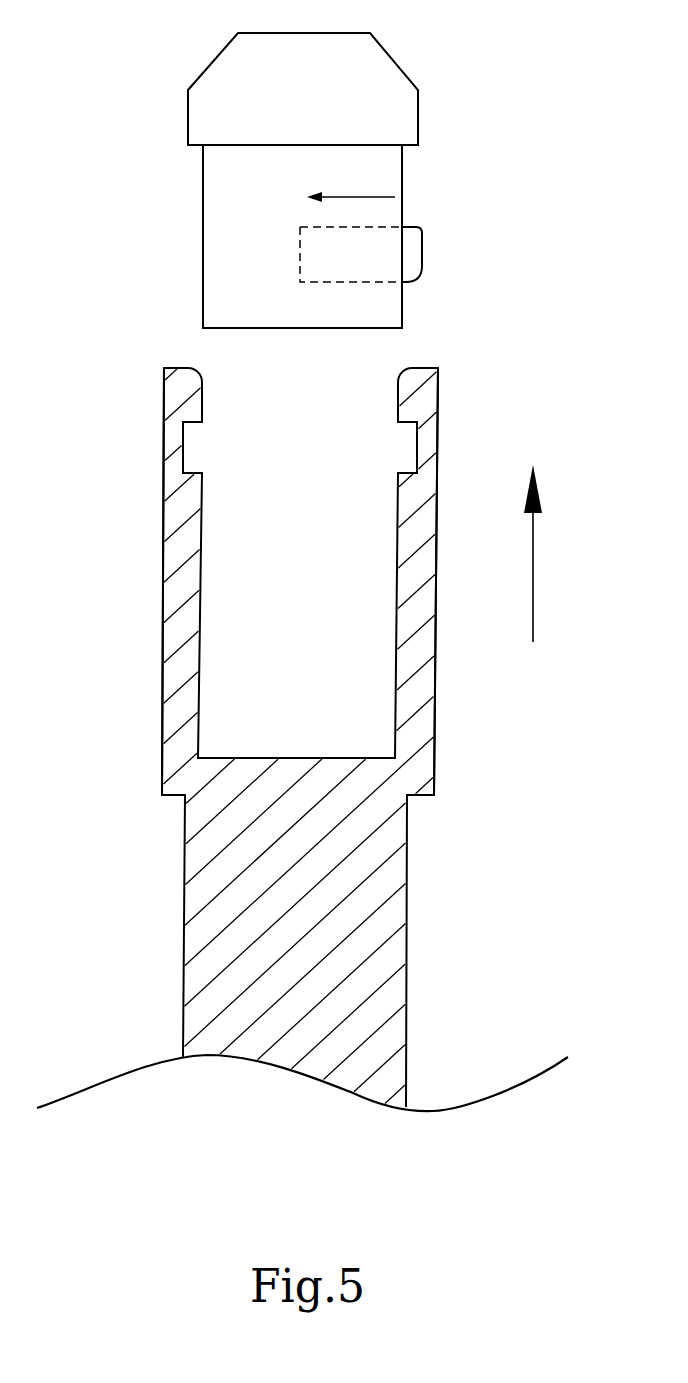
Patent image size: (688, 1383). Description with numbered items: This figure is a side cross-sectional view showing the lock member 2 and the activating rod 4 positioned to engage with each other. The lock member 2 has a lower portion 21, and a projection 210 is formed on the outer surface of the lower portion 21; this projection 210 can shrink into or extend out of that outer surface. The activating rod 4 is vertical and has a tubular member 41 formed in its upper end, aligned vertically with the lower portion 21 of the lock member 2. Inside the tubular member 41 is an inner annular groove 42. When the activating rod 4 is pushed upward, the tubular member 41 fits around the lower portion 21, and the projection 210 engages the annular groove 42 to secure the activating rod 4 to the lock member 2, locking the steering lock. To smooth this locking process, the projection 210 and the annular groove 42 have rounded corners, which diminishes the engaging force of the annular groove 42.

The lock member 2 is at (197, 80).
The lower portion 21 is at (203, 240).
The projection 210 is at (412, 240).
The activating rod 4 is at (132, 768).
The tubular member 41 is at (168, 562).
The inner annular groove 42 is at (185, 443).